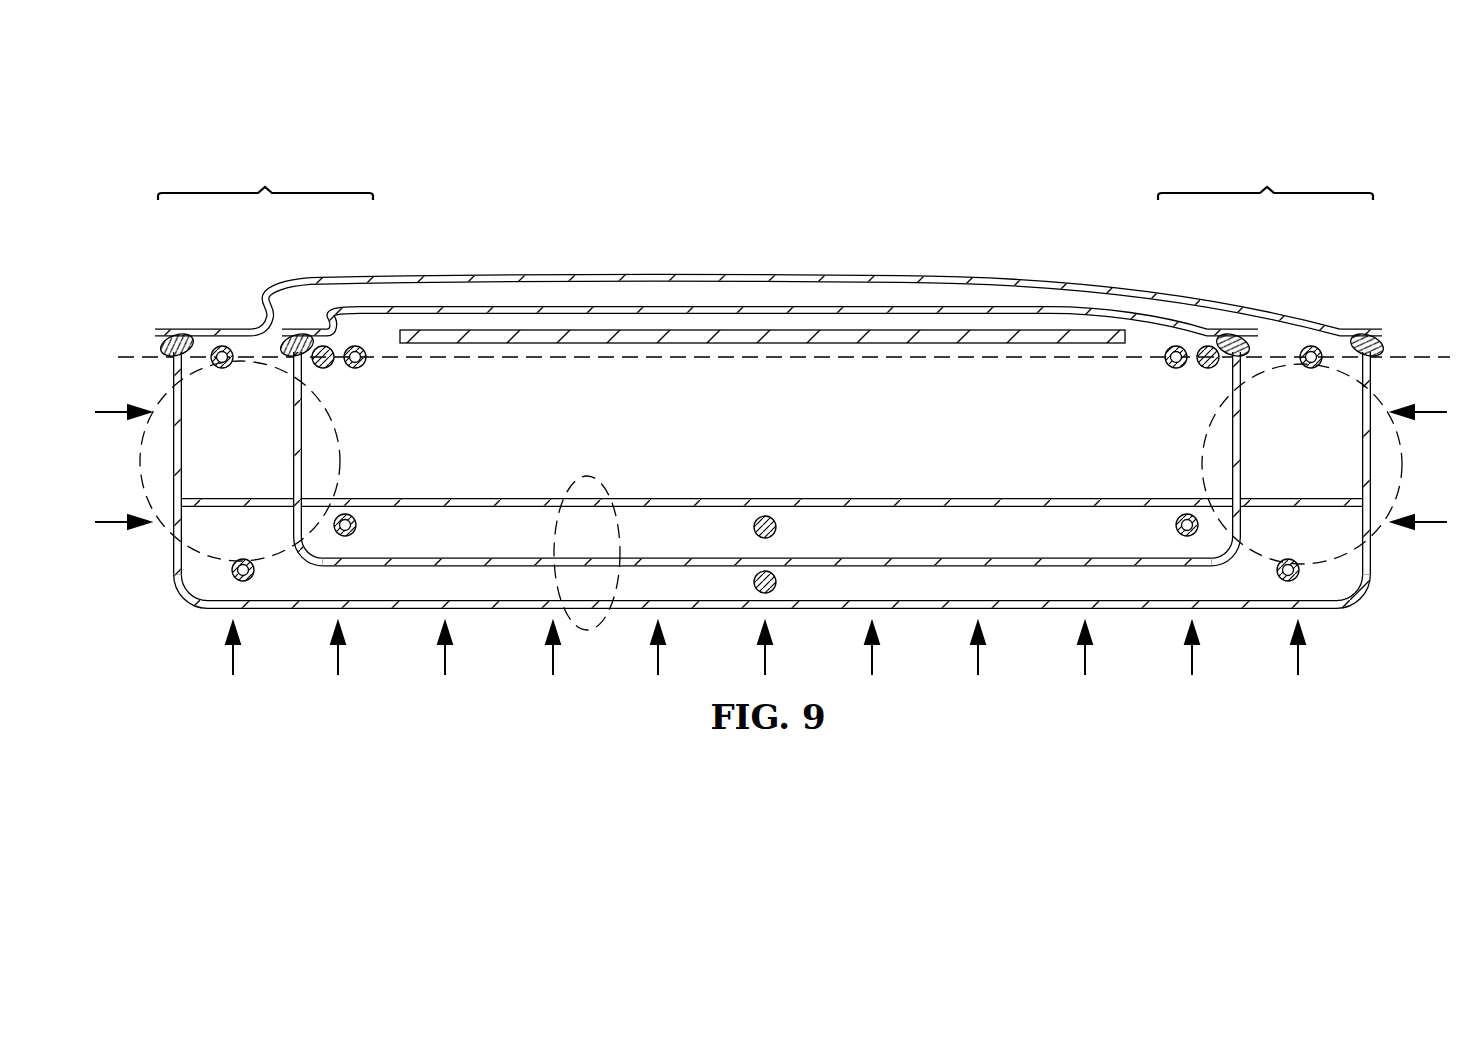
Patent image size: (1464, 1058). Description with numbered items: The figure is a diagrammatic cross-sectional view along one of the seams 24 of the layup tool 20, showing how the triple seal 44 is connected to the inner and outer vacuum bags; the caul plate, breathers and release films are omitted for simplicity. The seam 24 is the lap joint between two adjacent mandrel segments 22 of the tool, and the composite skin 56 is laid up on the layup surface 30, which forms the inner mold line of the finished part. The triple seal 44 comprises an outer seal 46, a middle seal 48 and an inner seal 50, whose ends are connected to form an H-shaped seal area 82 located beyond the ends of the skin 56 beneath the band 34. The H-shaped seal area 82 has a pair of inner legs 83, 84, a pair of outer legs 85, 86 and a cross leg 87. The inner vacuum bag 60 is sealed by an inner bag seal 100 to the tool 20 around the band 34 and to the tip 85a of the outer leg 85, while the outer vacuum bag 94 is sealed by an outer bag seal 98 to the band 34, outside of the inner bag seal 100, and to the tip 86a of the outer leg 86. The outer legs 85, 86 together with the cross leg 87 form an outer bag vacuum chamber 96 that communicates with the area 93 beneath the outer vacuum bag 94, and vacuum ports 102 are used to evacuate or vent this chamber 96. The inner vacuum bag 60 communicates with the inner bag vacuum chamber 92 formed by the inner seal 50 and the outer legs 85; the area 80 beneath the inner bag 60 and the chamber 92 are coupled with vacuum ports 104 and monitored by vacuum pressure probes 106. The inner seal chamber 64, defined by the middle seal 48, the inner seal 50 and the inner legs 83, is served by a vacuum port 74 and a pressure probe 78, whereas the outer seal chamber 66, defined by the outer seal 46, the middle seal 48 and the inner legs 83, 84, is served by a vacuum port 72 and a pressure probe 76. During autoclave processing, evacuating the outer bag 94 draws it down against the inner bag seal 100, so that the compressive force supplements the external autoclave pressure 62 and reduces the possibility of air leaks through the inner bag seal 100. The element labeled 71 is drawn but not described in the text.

The layup tool 20 is at (684, 207).
The mandrel segments 22 is at (772, 259).
The seam 24 is at (128, 294).
The layup surface 30 is at (127, 356).
The band 34 is at (765, 177).
The triple seal 44 is at (588, 631).
The outer seal 46 is at (518, 609).
The middle seal 48 is at (720, 557).
The inner seal 50 is at (1020, 497).
The composite skin 56 is at (892, 345).
The inner vacuum bag 60 is at (909, 307).
The autoclave pressure 62 is at (112, 416).
The inner seal chamber 64 is at (925, 514).
The outer seal chamber 66 is at (928, 605).
The bend portion 71 is at (1182, 336).
The vacuum port 72 is at (255, 573).
The vacuum port 74 is at (357, 527).
The pressure probe 76 is at (774, 593).
The vacuum pressure probe 78 is at (777, 526).
The area beneath the inner vacuum bag 80 is at (368, 321).
The H-shaped seal area 82 is at (341, 455).
The inner leg 83 is at (304, 520).
The inner leg 84 is at (770, 508).
The outer leg 85 is at (292, 430).
The tip of outer leg 85a is at (311, 366).
The outer leg 86 is at (172, 466).
The tip of outer leg 86a is at (173, 367).
The cross leg 87 is at (270, 511).
The inner bag vacuum chamber 92 is at (751, 444).
The area beneath the outer vacuum bag 93 is at (249, 336).
The outer vacuum bag 94 is at (570, 278).
The outer bag vacuum chamber 96 is at (221, 411).
The outer bag seal 98 is at (176, 336).
The inner bag seal 100 is at (294, 338).
The vacuum port 102 is at (220, 346).
The vacuum port 104 is at (368, 364).
The vacuum pressure probe 106 is at (327, 346).